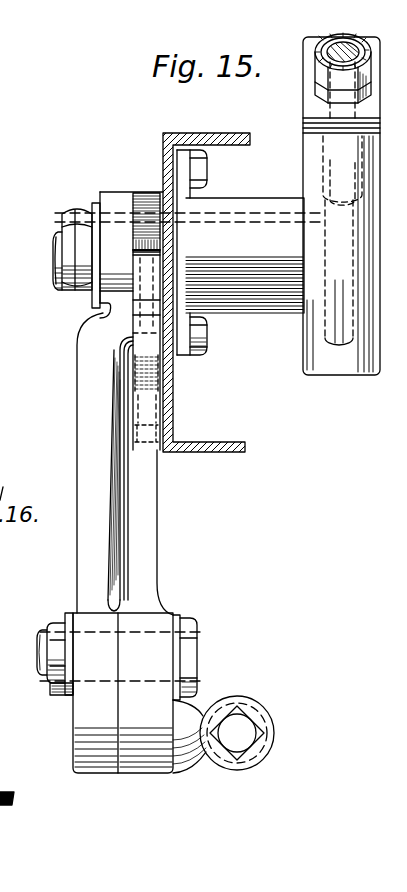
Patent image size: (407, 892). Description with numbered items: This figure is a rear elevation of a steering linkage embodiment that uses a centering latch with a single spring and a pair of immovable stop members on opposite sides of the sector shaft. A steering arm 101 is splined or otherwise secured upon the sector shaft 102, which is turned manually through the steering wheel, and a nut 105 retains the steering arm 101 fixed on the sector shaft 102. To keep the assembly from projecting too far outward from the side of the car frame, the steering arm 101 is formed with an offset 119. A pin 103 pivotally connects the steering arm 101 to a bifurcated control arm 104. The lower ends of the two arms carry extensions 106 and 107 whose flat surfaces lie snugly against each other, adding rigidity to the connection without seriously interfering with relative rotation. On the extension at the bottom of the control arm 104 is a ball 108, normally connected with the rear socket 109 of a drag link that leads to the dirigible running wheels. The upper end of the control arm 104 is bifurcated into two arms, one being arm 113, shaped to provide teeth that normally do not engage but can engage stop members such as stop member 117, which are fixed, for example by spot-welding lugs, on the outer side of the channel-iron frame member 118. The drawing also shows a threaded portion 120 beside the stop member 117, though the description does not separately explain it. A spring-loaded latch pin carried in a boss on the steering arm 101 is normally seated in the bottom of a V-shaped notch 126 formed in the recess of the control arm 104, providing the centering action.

The steering arm 101 is at (88, 457).
The sector shaft 102 is at (56, 248).
The pin 103 is at (43, 640).
The control arm 104 is at (147, 500).
The nut 105 is at (80, 203).
The extension 106 is at (93, 766).
The extension 107 is at (153, 766).
The ball 108 is at (247, 762).
The rear socket 109 is at (276, 733).
The arm 113 is at (134, 314).
The stop member 117 is at (168, 252).
The frame member 118 is at (163, 134).
The offset 119 is at (88, 332).
The threaded portion 120 is at (134, 366).
The V-shaped notch 126 is at (166, 431).